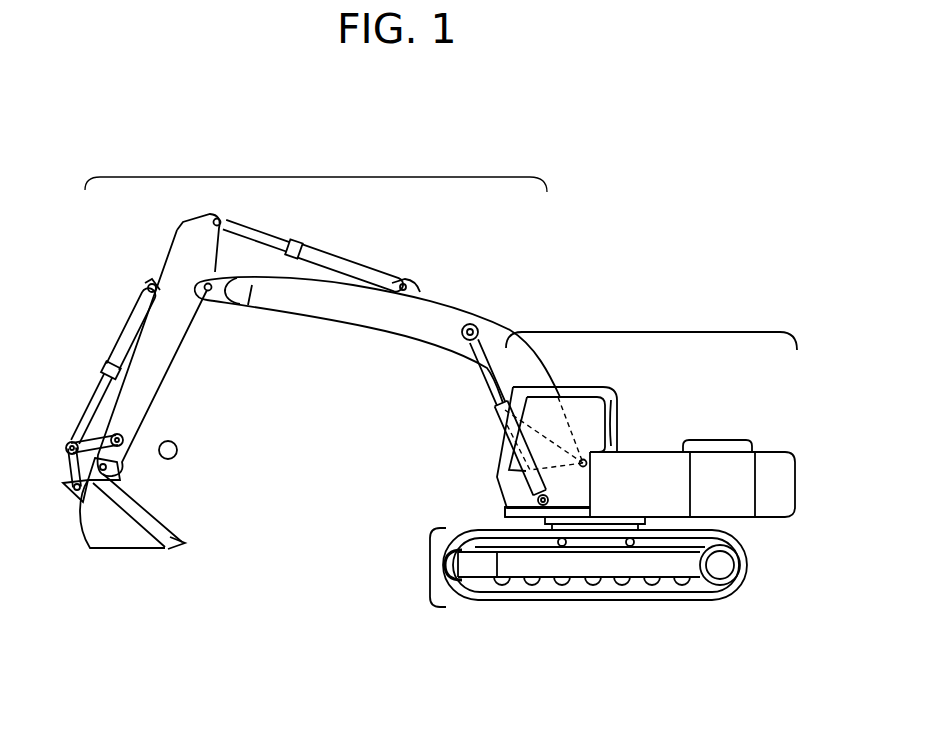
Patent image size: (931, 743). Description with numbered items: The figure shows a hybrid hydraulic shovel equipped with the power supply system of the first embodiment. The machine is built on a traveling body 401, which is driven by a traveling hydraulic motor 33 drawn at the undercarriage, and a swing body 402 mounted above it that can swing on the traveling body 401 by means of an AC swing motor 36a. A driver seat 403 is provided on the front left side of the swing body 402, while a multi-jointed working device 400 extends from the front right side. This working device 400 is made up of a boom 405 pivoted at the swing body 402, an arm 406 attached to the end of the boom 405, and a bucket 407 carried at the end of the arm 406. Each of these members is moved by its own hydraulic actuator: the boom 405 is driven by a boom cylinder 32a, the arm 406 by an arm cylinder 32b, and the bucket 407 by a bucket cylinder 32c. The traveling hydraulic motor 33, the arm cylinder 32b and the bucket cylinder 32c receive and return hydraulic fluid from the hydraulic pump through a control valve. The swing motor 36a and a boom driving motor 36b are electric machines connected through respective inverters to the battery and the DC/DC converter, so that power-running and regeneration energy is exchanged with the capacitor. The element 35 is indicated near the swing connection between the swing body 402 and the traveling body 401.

The multi-jointed working device 400 is at (313, 168).
The traveling body 401 is at (543, 574).
The swing body 402 is at (643, 328).
The driver seat 403 is at (575, 392).
The boom 405 is at (381, 327).
The arm 406 is at (185, 235).
The bucket 407 is at (117, 552).
The boom cylinder 32a is at (509, 400).
The arm cylinder 32b is at (313, 249).
The bucket cylinder 32c is at (140, 313).
The traveling hydraulic motor 33 is at (723, 567).
The swing circle 35 is at (627, 518).
The swing motor 36a is at (596, 518).
The boom driving motor 36b is at (503, 509).